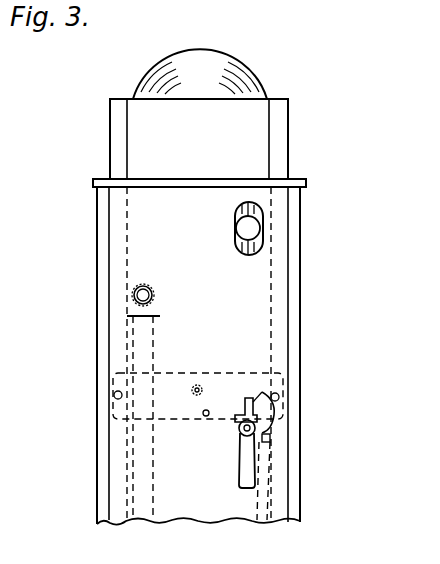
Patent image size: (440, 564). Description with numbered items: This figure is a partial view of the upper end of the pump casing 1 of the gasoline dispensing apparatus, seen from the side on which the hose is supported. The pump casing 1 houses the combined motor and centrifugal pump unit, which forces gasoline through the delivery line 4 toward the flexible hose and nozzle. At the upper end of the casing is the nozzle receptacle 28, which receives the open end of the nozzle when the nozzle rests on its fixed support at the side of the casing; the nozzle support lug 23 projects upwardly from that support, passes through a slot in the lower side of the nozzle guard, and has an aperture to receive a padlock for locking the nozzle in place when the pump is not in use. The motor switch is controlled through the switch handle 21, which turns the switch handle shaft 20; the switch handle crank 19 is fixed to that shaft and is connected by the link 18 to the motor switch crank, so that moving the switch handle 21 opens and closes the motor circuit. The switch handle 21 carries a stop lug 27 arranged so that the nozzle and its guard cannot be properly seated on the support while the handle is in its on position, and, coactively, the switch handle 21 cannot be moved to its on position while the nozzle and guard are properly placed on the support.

The pump casing 1 is at (103, 501).
The delivery line 4 is at (154, 492).
The link 18 is at (271, 514).
The switch handle crank 19 is at (272, 438).
The switch handle shaft 20 is at (237, 431).
The switch handle 21 is at (247, 468).
The nozzle support lug 23 is at (244, 411).
The stop lug 27 is at (271, 376).
The nozzle receptacle 28 is at (237, 230).